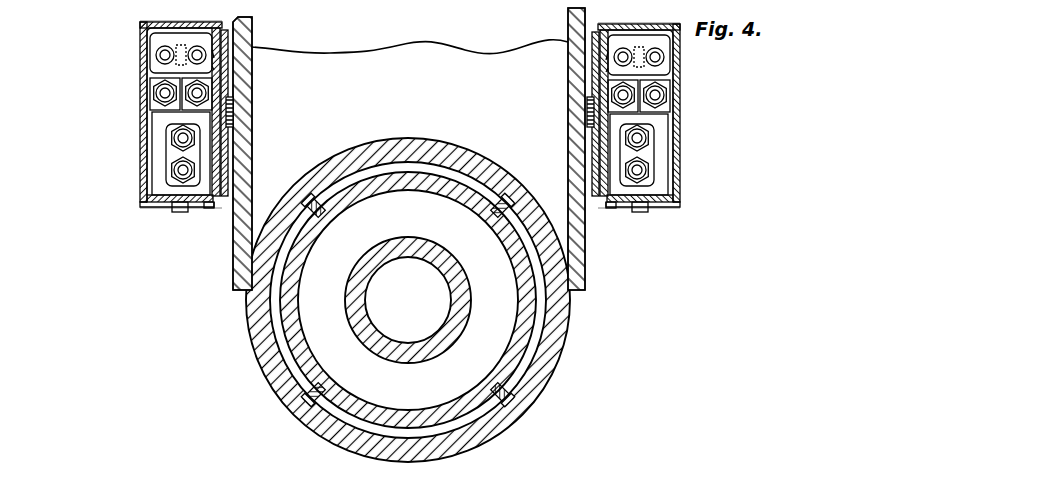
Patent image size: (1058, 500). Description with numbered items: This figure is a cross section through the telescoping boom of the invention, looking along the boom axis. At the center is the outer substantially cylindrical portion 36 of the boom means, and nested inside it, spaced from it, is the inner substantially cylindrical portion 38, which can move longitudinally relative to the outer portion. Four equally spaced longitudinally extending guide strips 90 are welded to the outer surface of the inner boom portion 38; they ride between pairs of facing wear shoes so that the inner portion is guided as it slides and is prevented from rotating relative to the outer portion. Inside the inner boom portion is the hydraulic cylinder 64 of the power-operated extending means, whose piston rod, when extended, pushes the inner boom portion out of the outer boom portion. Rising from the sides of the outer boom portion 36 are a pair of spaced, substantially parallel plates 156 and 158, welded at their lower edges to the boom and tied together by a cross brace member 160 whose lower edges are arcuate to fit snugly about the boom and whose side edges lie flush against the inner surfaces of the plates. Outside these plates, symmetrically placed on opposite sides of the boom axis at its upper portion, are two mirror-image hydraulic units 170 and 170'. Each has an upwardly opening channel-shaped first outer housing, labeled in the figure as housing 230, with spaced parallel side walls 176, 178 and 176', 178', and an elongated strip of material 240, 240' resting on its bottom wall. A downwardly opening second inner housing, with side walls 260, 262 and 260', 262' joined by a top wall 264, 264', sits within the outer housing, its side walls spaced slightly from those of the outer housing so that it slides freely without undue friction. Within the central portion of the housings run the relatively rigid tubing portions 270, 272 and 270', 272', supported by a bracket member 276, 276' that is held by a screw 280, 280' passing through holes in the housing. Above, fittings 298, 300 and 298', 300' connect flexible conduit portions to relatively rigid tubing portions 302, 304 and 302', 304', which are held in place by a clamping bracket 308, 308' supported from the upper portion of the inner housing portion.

The outer substantially cylindrical portion 36 is at (470, 443).
The inner substantially cylindrical portion 38 is at (383, 420).
The hydraulic cylinder 64 is at (447, 342).
The guide strips 90 is at (318, 209).
The plate 156 is at (237, 278).
The plate 158 is at (585, 282).
The cross brace member 160 is at (428, 103).
The hydraulic unit 170 is at (133, 114).
The hydraulic unit 170' is at (696, 115).
The side wall 176 is at (160, 112).
The side wall 176' is at (667, 113).
The side wall 178 is at (262, 113).
The side wall 178' is at (563, 114).
The housing 230 is at (163, 22).
The strip of material 240 is at (158, 220).
The strip of material 240' is at (637, 223).
The side wall 260 is at (154, 153).
The side wall 260' is at (672, 154).
The side wall 262 is at (261, 129).
The side wall 262' is at (560, 134).
The top wall 264 is at (190, 32).
The top wall 264' is at (674, 54).
The relatively rigid tubing portion 270 is at (144, 157).
The relatively rigid tubing portion 270' is at (681, 159).
The relatively rigid tubing portion 272 is at (150, 183).
The relatively rigid tubing portion 272' is at (672, 186).
The bracket member 276 is at (217, 221).
The bracket member 276' is at (670, 220).
The screw 280 is at (176, 229).
The screw 280' is at (662, 224).
The fitting 298 is at (137, 87).
The fitting 298' is at (687, 98).
The fitting 300 is at (243, 94).
The fitting 300' is at (580, 101).
The relatively rigid tubing portion 302 is at (153, 51).
The relatively rigid tubing portion 302' is at (671, 65).
The relatively rigid tubing portion 304 is at (252, 41).
The relatively rigid tubing portion 304' is at (566, 64).
The clamping bracket 308 is at (257, 66).
The clamping bracket 308' is at (564, 84).